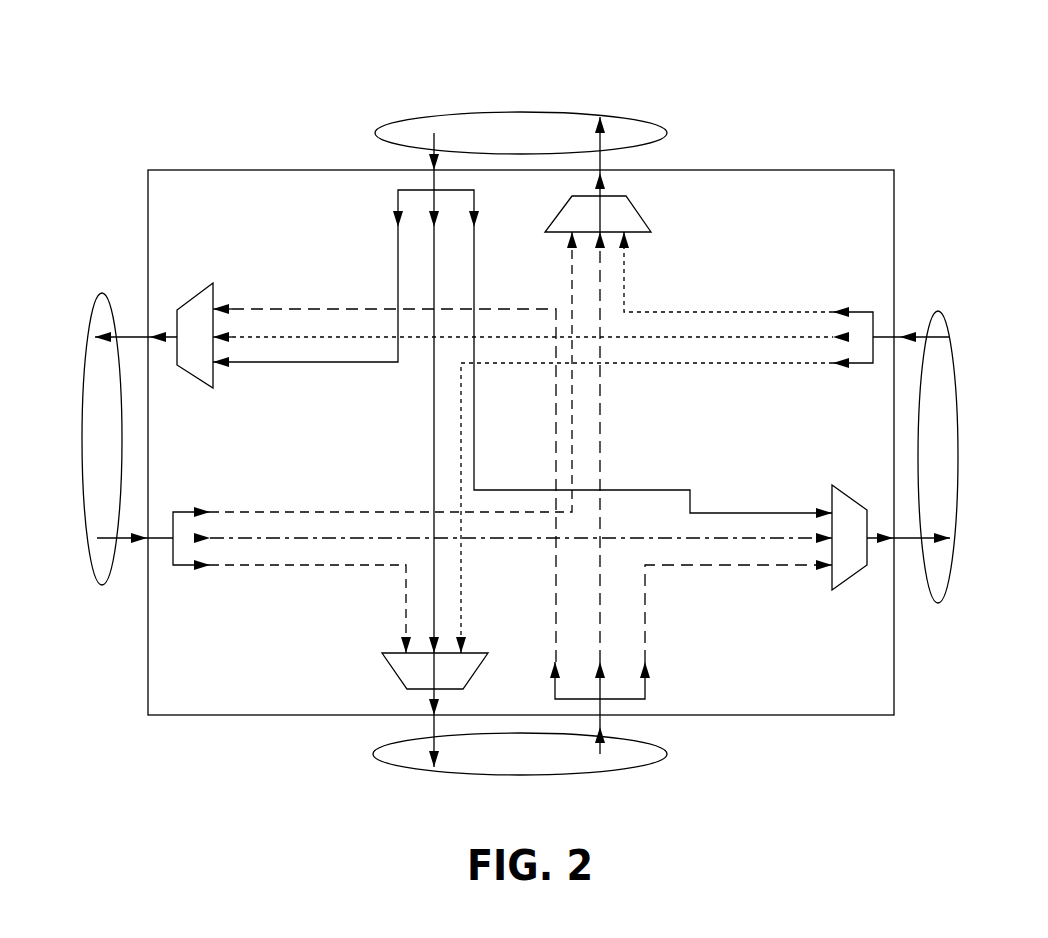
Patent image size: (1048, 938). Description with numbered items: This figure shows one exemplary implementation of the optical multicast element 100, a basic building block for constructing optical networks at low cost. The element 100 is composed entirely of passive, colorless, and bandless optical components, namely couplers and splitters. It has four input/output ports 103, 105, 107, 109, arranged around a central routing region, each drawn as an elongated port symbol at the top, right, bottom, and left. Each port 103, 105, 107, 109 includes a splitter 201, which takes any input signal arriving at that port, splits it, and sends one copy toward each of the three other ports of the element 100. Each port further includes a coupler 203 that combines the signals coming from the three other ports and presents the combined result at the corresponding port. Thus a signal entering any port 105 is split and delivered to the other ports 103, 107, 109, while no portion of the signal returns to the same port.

The optical multicast element 100 is at (696, 80).
The port 103 is at (511, 112).
The port 105 is at (957, 457).
The port 107 is at (585, 773).
The port 109 is at (90, 318).
The splitter 201 is at (398, 190).
The coupler 203 is at (636, 211).